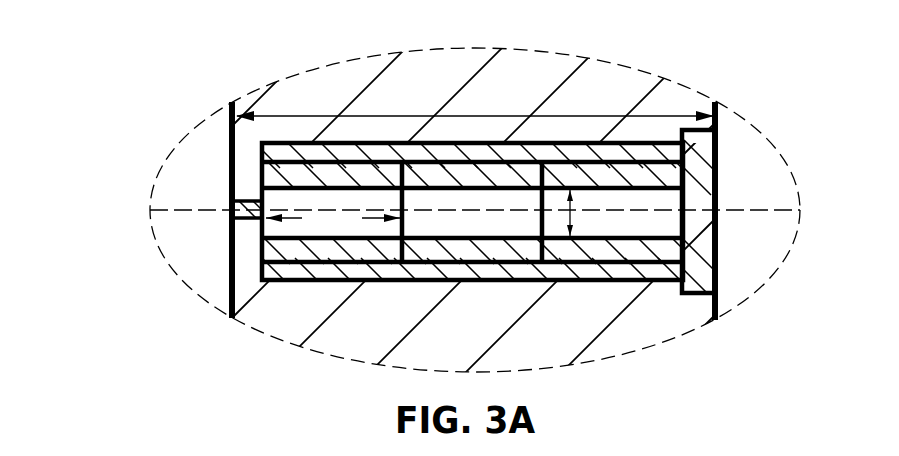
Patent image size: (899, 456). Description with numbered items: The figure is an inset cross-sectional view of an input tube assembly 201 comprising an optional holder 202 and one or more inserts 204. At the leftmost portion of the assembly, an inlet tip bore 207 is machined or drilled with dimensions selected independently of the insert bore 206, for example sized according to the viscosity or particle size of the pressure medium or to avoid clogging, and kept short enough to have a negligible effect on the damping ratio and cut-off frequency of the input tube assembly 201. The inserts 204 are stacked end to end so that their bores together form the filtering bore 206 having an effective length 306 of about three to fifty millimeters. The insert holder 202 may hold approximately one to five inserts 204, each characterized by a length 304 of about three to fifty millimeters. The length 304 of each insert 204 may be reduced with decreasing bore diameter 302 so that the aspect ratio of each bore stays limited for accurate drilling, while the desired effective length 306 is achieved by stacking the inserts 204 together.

The input tube assembly 201 is at (276, 40).
The holder 202 is at (695, 273).
The inserts 204 is at (605, 250).
The insert bore 206 is at (677, 223).
The inlet tip bore 207 is at (228, 190).
The bore diameter 302 is at (594, 213).
The length 304 is at (333, 215).
The effective length 306 is at (603, 113).